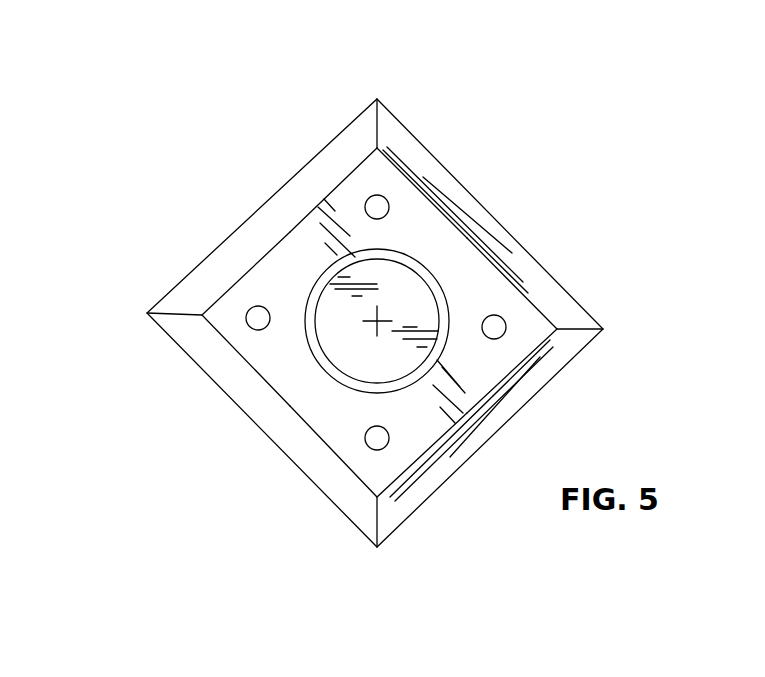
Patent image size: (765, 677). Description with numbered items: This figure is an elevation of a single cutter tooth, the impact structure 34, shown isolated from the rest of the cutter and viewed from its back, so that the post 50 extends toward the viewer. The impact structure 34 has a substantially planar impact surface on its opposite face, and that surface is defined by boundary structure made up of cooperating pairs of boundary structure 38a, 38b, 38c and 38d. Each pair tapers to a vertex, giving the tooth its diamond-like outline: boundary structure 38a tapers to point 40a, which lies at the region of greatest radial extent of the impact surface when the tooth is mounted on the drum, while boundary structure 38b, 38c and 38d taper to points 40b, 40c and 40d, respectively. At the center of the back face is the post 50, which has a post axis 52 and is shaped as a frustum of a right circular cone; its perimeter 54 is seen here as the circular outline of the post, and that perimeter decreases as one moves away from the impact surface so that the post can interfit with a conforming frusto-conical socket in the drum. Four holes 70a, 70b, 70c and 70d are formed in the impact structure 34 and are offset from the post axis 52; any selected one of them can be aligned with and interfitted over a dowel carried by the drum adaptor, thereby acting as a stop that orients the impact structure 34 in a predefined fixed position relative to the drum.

The impact structure 34 is at (553, 203).
The boundary structure 38a is at (392, 522).
The boundary structure 38b is at (570, 312).
The boundary structure 38c is at (347, 145).
The boundary structure 38d is at (182, 293).
The vertex or point 40a is at (377, 548).
The point 40b is at (604, 329).
The point 40c is at (377, 97).
The point 40d is at (146, 313).
The post 50 is at (400, 347).
The post axis 52 is at (377, 321).
The perimeter of post 54 is at (305, 318).
The hole 70a is at (377, 207).
The hole 70b is at (258, 312).
The hole 70c is at (372, 443).
The hole 70d is at (496, 326).